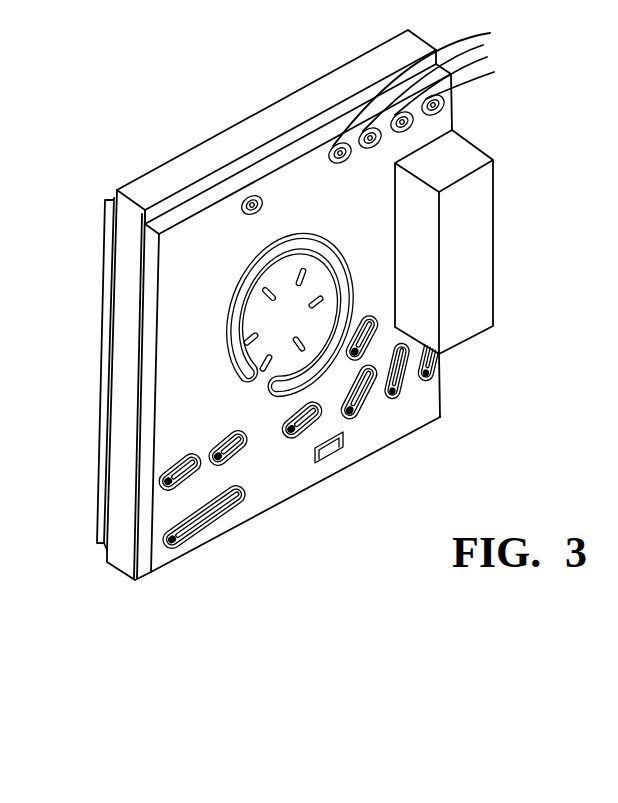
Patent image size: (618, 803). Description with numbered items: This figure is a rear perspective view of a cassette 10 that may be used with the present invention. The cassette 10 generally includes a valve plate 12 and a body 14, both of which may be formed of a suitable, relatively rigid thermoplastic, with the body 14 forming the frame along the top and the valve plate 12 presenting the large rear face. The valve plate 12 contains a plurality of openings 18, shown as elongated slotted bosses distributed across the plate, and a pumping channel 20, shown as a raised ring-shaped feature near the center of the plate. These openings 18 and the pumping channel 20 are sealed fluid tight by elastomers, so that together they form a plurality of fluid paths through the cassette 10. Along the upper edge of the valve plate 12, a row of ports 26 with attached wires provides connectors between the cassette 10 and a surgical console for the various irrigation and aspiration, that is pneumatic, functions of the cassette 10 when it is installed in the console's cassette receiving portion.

The cassette 10 is at (197, 92).
The valve plate 12 is at (293, 488).
The body 14 is at (147, 180).
The openings 18 is at (217, 443).
The pumping channel 20 is at (228, 302).
The ports 26 is at (427, 100).